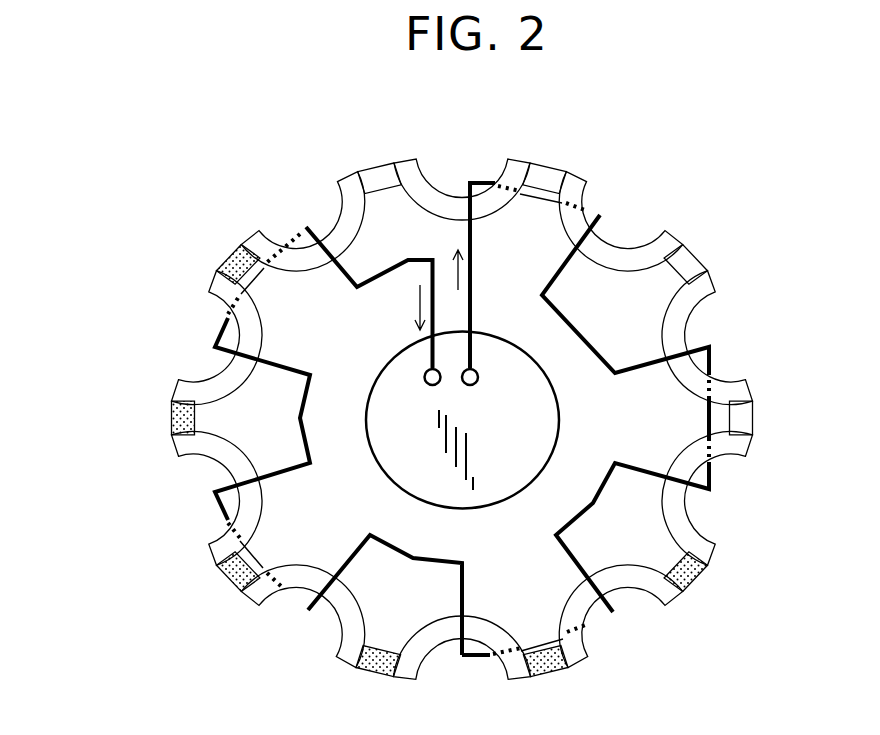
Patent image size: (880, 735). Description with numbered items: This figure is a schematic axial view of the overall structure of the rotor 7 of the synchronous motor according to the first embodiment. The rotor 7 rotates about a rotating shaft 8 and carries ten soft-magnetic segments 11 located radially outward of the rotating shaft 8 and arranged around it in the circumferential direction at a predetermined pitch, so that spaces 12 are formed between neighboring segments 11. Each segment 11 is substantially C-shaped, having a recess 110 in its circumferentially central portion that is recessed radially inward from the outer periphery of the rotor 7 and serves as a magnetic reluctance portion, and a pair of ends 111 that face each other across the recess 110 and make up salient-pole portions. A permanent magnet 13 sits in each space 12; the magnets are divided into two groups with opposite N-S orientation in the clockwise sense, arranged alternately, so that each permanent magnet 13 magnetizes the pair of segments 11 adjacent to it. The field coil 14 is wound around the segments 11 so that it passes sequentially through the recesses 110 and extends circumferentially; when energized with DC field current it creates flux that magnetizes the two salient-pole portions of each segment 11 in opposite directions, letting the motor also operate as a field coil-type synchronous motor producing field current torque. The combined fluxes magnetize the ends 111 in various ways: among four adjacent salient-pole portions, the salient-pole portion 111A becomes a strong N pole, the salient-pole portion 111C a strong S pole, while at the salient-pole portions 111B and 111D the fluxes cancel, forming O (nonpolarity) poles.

The rotor 7 is at (673, 141).
The rotating shaft 8 is at (548, 420).
The segment 11 is at (702, 300).
The space 12 is at (729, 262).
The permanent magnet 13 is at (758, 417).
The field coil 14 is at (466, 575).
The recess 110 is at (640, 618).
The end 111 is at (170, 445).
The salient-pole portion 111A is at (410, 152).
The salient-pole portion 111B is at (510, 153).
The salient-pole portion 111C is at (600, 172).
The salient-pole portion 111D is at (675, 226).